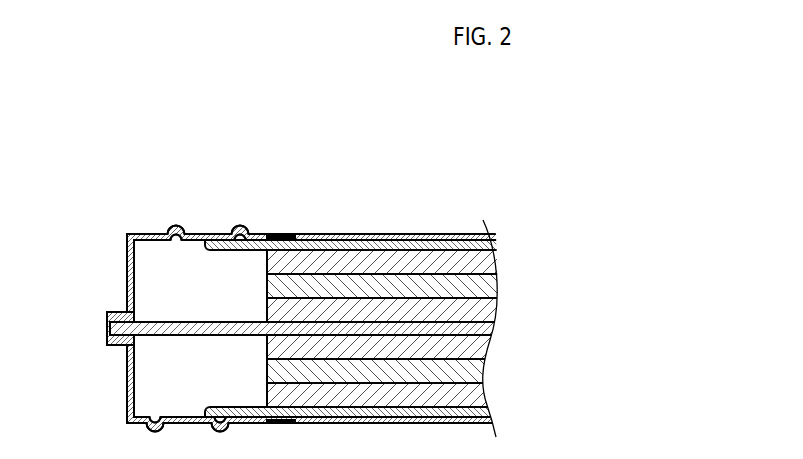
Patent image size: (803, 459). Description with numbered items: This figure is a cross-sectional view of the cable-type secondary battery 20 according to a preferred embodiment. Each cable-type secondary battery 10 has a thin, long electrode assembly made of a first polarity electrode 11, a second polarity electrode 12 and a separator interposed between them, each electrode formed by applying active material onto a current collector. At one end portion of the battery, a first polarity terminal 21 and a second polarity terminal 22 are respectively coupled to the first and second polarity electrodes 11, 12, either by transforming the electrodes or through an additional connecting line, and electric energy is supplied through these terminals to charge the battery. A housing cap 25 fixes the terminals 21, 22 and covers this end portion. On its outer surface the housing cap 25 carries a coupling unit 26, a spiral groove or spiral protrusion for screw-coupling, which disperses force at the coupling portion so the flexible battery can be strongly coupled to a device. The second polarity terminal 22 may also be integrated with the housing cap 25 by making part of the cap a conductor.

The cable-type secondary battery 10 is at (411, 234).
The first polarity electrode 11 is at (205, 322).
The second polarity electrode 12 is at (213, 248).
The cable-type secondary battery 20 is at (358, 178).
The first polarity terminal 21 is at (107, 325).
The second polarity terminal 22 is at (258, 234).
The housing cap 25 is at (127, 262).
The coupling unit 26 is at (175, 226).